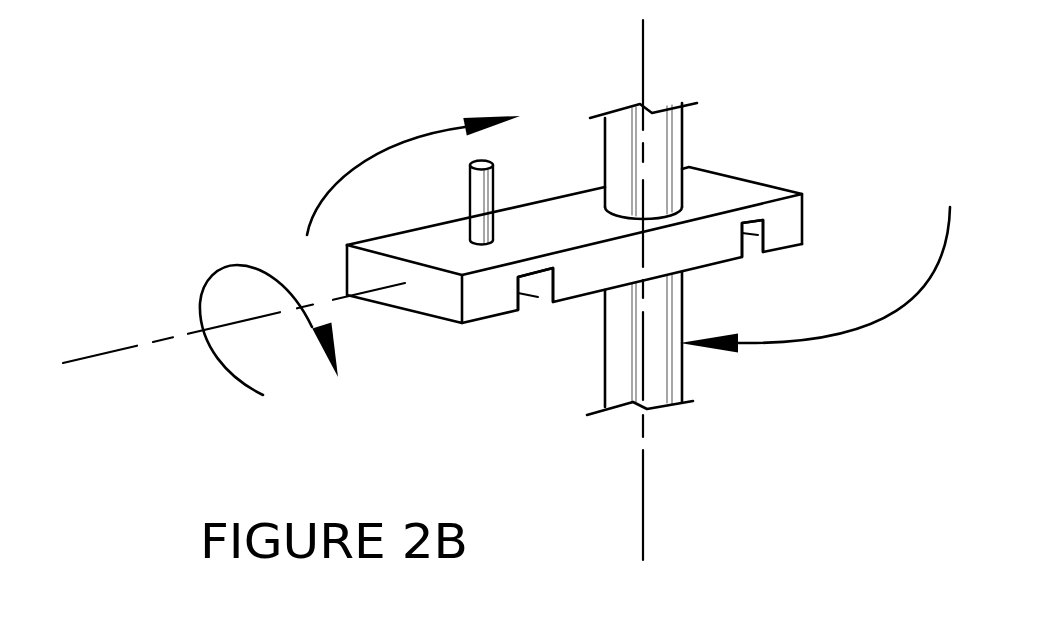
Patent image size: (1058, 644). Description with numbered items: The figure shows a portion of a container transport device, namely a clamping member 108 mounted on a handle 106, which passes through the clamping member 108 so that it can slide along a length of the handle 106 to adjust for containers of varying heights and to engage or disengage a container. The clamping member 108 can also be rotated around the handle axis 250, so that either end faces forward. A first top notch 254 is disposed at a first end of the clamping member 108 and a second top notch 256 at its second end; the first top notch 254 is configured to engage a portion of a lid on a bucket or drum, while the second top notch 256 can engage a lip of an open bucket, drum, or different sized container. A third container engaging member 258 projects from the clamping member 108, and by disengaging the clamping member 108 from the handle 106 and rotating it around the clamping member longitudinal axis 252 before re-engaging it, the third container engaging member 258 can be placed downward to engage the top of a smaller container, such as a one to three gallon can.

The handle 106 is at (683, 140).
The clamping member 108 is at (574, 188).
The handle axis 250 is at (645, 475).
The clamping member longitudinal axis 252 is at (170, 330).
The first top notch 254 is at (537, 297).
The second top notch 256 is at (762, 235).
The third container engaging member 258 is at (480, 215).